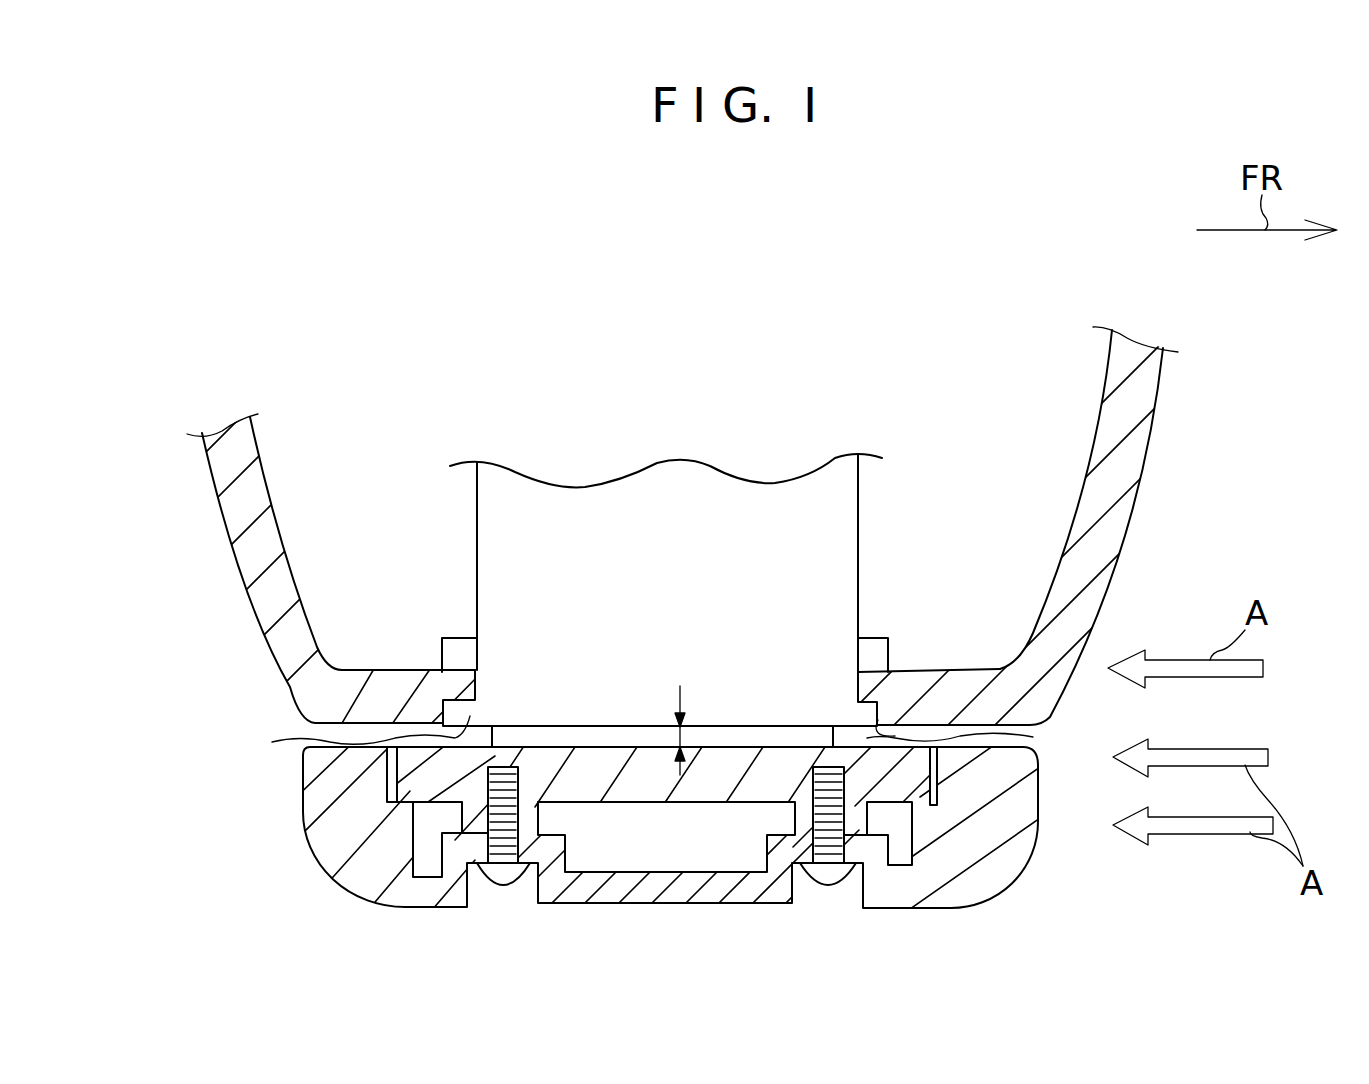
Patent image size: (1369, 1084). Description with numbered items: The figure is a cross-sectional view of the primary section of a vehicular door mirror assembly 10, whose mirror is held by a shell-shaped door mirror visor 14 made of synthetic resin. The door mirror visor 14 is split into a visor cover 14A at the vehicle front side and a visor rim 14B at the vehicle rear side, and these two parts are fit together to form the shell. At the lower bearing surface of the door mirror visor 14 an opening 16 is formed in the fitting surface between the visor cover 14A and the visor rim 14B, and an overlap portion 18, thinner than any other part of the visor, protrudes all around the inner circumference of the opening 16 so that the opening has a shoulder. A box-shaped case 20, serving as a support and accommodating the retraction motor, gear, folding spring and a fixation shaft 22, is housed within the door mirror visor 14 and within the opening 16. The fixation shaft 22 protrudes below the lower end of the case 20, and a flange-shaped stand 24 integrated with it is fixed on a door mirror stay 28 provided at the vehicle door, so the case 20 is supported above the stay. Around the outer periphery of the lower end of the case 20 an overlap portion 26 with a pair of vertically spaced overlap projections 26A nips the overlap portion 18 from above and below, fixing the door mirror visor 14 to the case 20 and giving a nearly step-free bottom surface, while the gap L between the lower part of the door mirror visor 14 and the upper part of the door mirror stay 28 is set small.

The vehicular door mirror assembly 10 is at (256, 296).
The door mirror visor 14 is at (1172, 388).
The visor cover 14A is at (1120, 477).
The visor rim 14B is at (240, 525).
The opening 16 is at (438, 672).
The overlap portion 18 is at (477, 688).
The case 20 is at (687, 488).
The fixation shaft 22 is at (638, 732).
The stand 24 is at (677, 776).
The overlap portion 26 is at (452, 628).
The overlap projections 26A is at (440, 650).
The door mirror stay 28 is at (320, 788).
The gap L is at (692, 726).